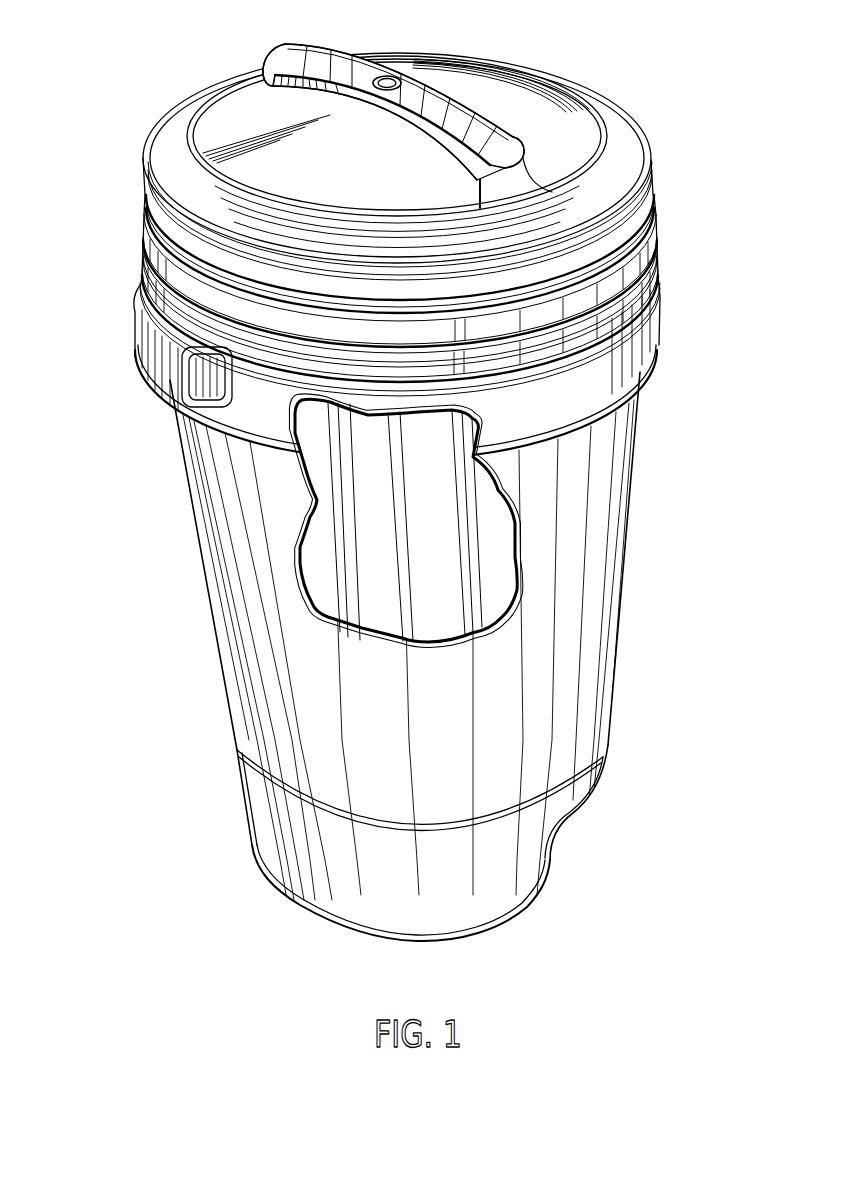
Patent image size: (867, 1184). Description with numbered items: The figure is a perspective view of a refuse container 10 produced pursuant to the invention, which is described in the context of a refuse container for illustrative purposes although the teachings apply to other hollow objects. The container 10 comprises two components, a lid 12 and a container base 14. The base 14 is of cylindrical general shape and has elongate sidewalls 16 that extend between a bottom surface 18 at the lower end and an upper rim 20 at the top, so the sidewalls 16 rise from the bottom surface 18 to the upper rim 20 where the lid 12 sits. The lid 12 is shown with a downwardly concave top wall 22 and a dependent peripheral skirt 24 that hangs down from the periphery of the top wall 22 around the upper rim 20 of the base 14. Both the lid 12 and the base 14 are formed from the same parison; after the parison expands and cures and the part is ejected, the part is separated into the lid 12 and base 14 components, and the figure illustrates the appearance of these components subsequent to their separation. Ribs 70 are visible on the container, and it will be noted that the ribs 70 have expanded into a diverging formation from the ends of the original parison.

The refuse container 10 is at (395, 506).
The lid 12 is at (413, 145).
The container base 14 is at (583, 815).
The sidewalls 16 is at (263, 674).
The bottom surface 18 is at (378, 940).
The upper rim 20 is at (657, 266).
The top wall 22 is at (510, 98).
The peripheral skirt 24 is at (142, 208).
The ribs 70 is at (413, 532).